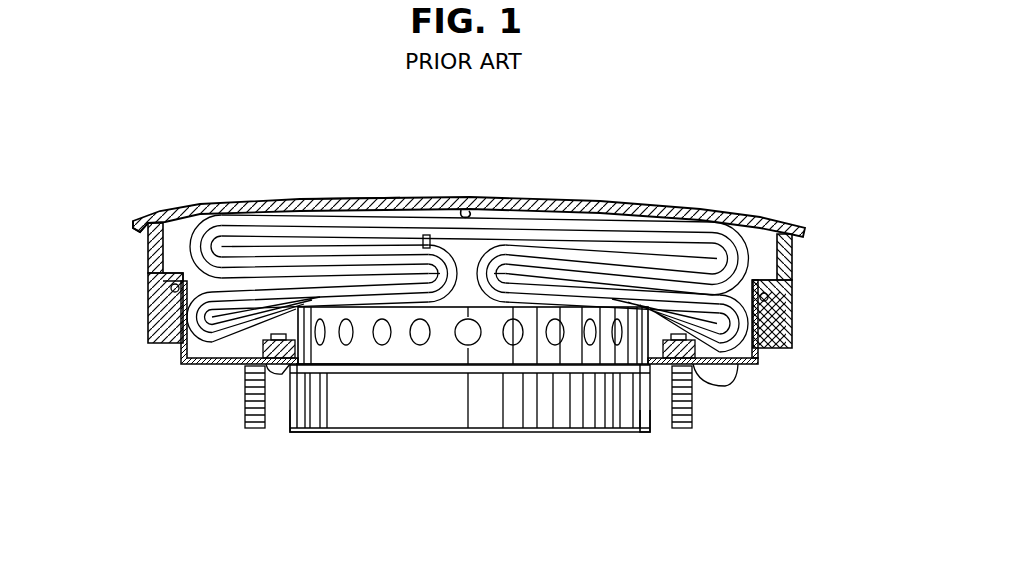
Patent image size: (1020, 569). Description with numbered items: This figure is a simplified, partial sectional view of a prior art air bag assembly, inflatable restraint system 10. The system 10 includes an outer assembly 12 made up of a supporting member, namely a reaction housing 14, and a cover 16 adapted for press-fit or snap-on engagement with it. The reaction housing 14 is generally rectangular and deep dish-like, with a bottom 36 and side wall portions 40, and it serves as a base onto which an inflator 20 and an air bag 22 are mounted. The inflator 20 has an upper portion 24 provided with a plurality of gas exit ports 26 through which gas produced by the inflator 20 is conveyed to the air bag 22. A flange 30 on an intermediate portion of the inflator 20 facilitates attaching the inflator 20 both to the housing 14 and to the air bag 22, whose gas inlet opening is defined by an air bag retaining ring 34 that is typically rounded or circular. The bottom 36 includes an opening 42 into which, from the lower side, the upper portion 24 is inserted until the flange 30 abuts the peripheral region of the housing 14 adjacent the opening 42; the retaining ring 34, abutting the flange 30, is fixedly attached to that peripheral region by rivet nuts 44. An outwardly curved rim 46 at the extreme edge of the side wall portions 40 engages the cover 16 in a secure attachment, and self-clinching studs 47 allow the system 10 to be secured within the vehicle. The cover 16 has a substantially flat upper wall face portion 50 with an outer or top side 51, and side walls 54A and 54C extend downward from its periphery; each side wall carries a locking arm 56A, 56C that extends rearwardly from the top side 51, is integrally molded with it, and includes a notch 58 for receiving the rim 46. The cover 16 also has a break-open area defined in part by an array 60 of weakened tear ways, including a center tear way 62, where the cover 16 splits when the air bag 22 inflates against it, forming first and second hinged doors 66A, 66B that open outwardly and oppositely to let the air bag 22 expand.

The air bag assembly, inflatable restraint system 10 is at (768, 208).
The outer assembly 12 is at (138, 322).
The reaction housing 14 is at (180, 358).
The cover 16 is at (142, 218).
The inflator 20 is at (437, 410).
The air bag 22 is at (203, 228).
The upper portion 24 is at (323, 433).
The gas exit ports 26 is at (332, 365).
The flange 30 is at (525, 380).
The air bag retaining ring 34 is at (662, 380).
The bottom 36 is at (748, 368).
The side wall portions 40 is at (778, 352).
The opening 42 is at (638, 432).
The rivet nuts 44 is at (698, 383).
The outwardly curved rim 46 is at (792, 305).
The self-clinching studs 47 is at (245, 410).
The upper wall face portion 50 is at (212, 208).
The top side 51 is at (355, 200).
The side wall 54A is at (148, 242).
The side wall 54C is at (792, 250).
The locking arm 56A is at (152, 276).
The locking arm 56C is at (775, 291).
The notch 58 is at (792, 336).
The array of tear ways 60 is at (469, 204).
The center tear way 62 is at (463, 208).
The first hinged door 66A is at (278, 200).
The second hinged door 66B is at (597, 200).